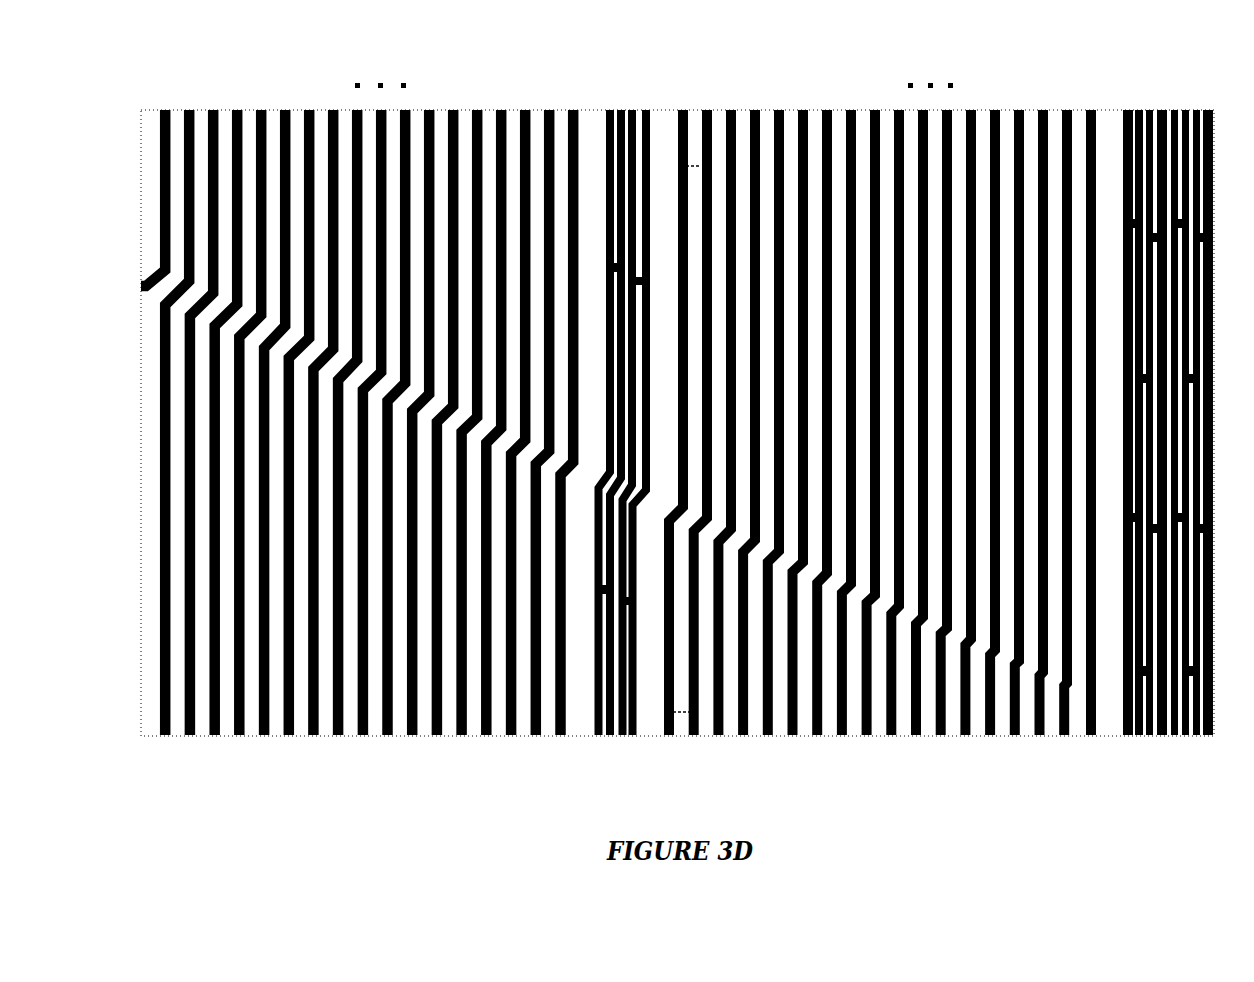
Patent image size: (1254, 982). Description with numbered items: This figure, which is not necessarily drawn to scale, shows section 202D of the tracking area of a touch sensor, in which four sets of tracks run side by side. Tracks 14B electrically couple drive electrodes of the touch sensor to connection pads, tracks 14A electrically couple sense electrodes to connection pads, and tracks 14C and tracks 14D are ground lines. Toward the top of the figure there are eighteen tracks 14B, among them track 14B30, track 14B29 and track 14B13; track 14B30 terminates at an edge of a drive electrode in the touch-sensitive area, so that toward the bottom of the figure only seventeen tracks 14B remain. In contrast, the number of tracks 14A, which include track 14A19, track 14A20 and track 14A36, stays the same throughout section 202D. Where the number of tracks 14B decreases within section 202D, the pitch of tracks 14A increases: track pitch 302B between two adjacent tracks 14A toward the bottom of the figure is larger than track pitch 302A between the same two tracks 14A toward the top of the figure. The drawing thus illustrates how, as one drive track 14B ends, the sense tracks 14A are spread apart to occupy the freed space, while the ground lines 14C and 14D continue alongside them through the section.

The track 14B30 is at (165, 98).
The conductive trace 14B29 of trace group 14B 14B29 is at (190, 98).
The conductive trace 14B13 of trace group 14B 14B13 is at (573, 98).
The conductive trace 14A19 of trace group 14A 14A19 is at (683, 98).
The conductive trace 14A20 of trace group 14A 14A20 is at (707, 98).
The conductive trace 14A36 of trace group 14A 14A36 is at (1091, 98).
The track pitch 302A is at (694, 156).
The track pitch 302B is at (731, 765).
The section 202D is at (1104, 732).
The tracks 14B is at (344, 408).
The tracks 14C is at (650, 741).
The tracks 14A is at (881, 417).
The tracks 14D is at (1215, 741).